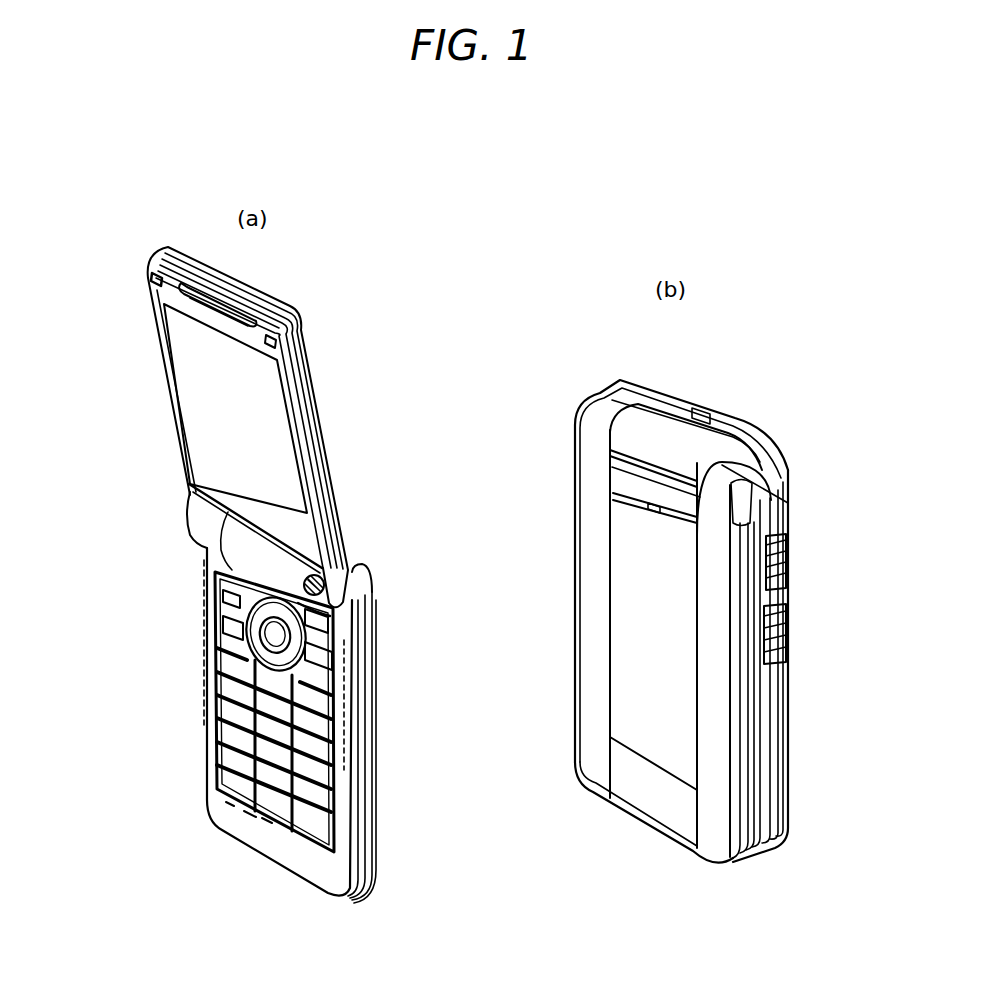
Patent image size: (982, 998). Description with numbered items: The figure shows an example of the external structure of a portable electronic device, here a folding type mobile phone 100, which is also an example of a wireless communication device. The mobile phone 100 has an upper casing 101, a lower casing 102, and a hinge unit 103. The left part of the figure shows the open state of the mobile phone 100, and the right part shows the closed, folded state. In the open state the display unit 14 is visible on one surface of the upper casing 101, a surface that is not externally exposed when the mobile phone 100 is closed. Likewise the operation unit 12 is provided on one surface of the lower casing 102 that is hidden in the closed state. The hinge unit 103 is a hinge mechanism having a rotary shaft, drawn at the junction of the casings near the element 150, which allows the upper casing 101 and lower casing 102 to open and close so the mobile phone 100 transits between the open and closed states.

The mobile phone 100 is at (330, 300).
The upper casing 101 is at (160, 345).
The display unit 14 is at (214, 408).
The hinge unit 103 is at (210, 547).
The hinge shaft 150 is at (326, 583).
The operation unit 12 is at (203, 692).
The lower casing 102 is at (343, 813).